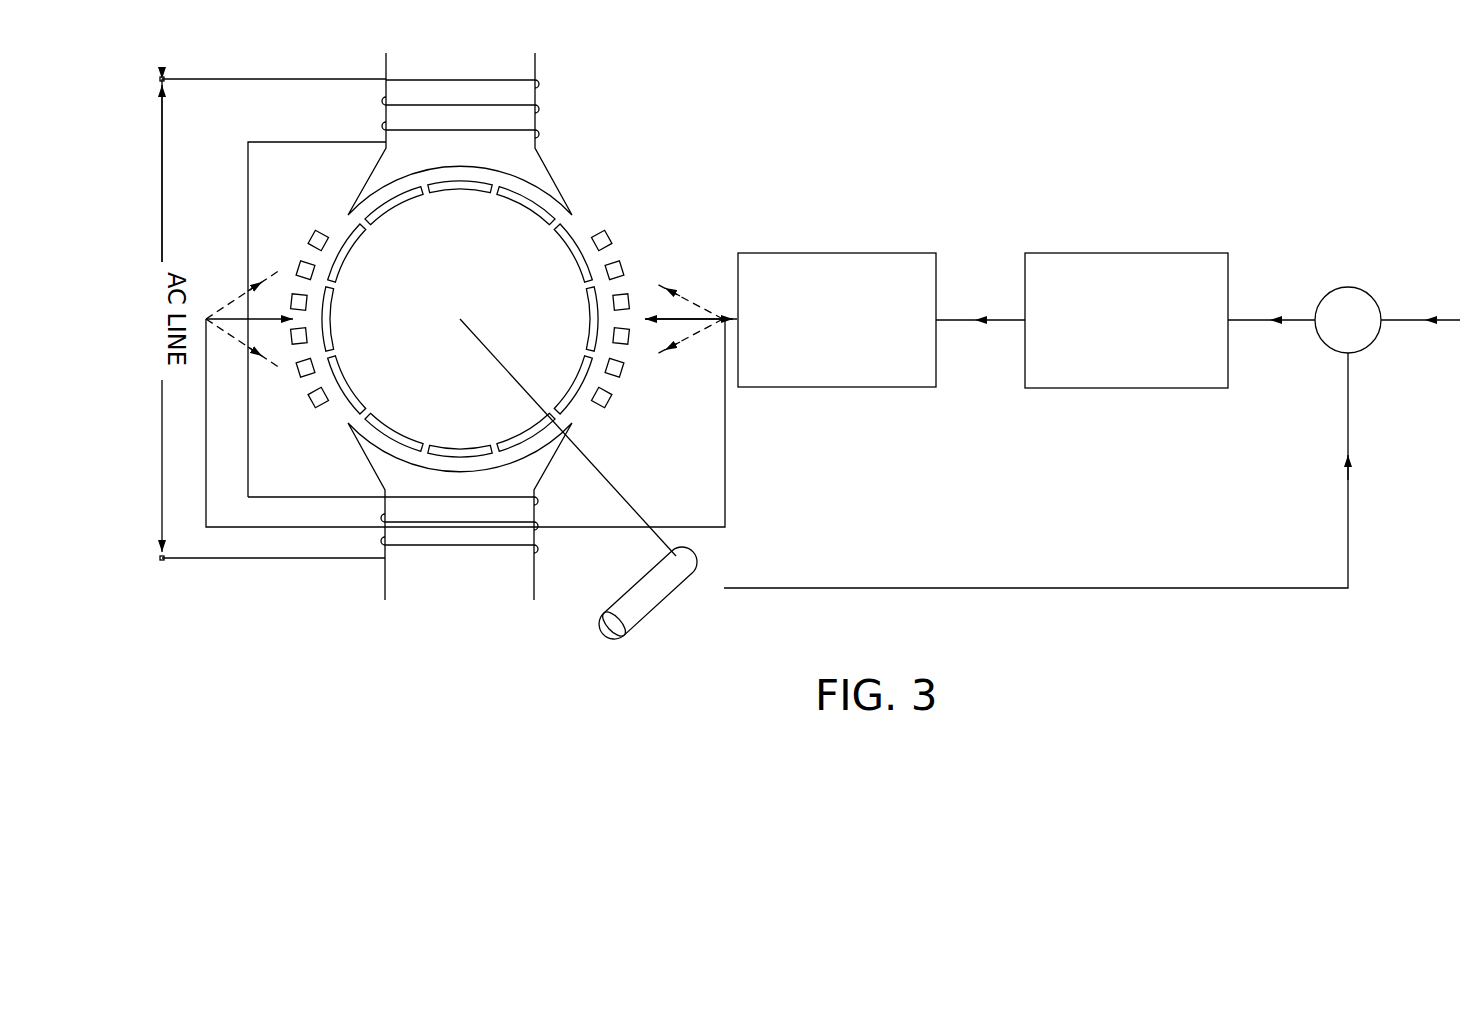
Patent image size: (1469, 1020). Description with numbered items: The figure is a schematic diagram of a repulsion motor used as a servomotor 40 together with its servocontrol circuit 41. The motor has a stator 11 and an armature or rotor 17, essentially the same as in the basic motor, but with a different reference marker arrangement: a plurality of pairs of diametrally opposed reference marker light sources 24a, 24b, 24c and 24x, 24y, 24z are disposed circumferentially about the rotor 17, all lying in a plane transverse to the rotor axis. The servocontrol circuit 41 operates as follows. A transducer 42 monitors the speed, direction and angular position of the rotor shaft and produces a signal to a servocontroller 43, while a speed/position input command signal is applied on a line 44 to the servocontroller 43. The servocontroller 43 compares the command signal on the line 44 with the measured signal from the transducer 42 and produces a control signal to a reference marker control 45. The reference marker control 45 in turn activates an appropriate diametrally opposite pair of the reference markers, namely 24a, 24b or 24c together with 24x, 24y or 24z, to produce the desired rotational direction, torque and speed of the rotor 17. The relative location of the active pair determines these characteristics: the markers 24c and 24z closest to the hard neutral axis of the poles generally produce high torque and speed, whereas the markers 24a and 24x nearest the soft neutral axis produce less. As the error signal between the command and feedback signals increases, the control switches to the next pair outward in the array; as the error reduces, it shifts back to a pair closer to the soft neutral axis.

The stator 11 is at (544, 57).
The rotor 17 is at (538, 200).
The reference marker light source 24a is at (630, 302).
The reference marker light source 24b is at (622, 270).
The reference marker light source 24c is at (611, 242).
The reference marker light source 24x is at (628, 340).
The reference marker light source 24y is at (622, 372).
The reference marker light source 24z is at (610, 402).
The servomotor 40 is at (461, 287).
The servocontrol circuit 41 is at (1099, 293).
The transducer 42 is at (712, 626).
The servocontroller 43 is at (1125, 388).
The line 44 is at (1393, 318).
The reference marker control 45 is at (835, 388).